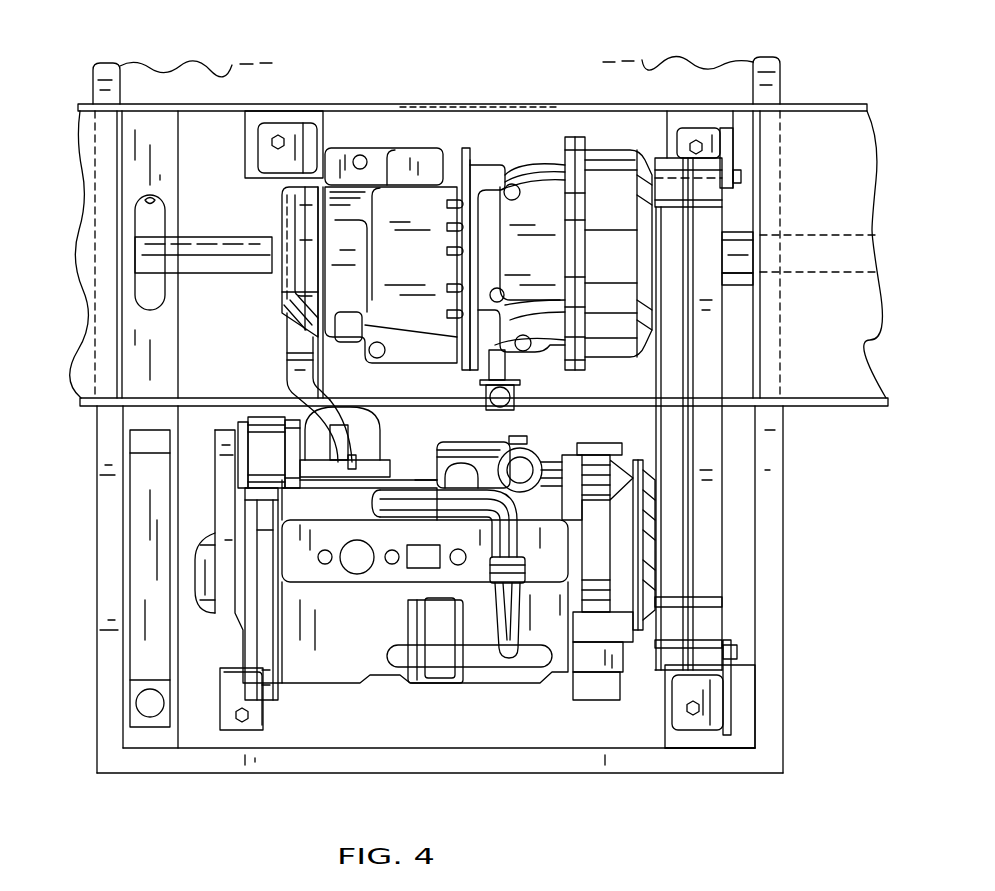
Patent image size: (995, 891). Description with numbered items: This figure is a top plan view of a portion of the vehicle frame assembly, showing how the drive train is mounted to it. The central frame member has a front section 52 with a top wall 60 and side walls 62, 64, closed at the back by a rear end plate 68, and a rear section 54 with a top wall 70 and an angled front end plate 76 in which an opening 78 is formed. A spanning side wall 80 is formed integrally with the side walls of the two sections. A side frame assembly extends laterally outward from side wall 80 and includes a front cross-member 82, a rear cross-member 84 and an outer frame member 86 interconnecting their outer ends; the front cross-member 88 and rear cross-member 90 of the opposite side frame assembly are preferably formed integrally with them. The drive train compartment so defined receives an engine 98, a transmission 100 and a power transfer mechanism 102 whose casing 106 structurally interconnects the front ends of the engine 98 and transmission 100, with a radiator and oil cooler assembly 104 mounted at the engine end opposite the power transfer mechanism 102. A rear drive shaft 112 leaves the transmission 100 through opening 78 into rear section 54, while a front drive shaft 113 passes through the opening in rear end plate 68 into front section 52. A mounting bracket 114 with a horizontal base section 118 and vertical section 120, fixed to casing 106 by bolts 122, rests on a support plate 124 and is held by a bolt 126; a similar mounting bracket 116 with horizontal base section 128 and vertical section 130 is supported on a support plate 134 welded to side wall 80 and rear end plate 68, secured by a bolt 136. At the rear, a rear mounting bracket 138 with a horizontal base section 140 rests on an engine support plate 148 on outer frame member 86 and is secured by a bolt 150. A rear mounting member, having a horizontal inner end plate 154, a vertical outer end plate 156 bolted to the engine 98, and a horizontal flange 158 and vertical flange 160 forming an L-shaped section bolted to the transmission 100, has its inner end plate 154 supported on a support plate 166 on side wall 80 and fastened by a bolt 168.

The front section 52 is at (877, 225).
The rear section 54 is at (71, 178).
The top wall 60 is at (860, 308).
The side wall 62 is at (862, 407).
The side wall 64 is at (832, 108).
The rear end plate 68 is at (753, 213).
The top wall 70 is at (88, 225).
The front end plate 76 is at (160, 125).
The opening 78 is at (157, 220).
The spanning side wall 80 is at (473, 104).
The front cross-member 82 is at (783, 587).
The rear cross-member 84 is at (93, 590).
The outer frame member 86 is at (220, 775).
The front cross-member 88 is at (772, 75).
The rear cross-member 90 is at (99, 92).
The engine 98 is at (510, 712).
The transmission 100 is at (505, 135).
The power transfer mechanism 102 is at (742, 450).
The radiator and oil cooler assembly 104 is at (123, 662).
The casing 106 is at (727, 512).
The rear drive shaft 112 is at (203, 275).
The front drive shaft 113 is at (738, 285).
The mounting bracket 114 is at (728, 707).
The mounting bracket 116 is at (718, 122).
The horizontal base section 118 is at (713, 735).
The vertical section 120 is at (695, 708).
The bolts 122 is at (737, 652).
The support plate 124 is at (680, 728).
The bolt 126 is at (667, 708).
The horizontal base section 128 is at (690, 128).
The vertical section 130 is at (720, 150).
The support plate 134 is at (663, 118).
The bolt 136 is at (689, 143).
The rear mounting bracket 138 is at (222, 725).
The horizontal base section 140 is at (253, 730).
The engine support plate 148 is at (270, 727).
The bolt 150 is at (243, 700).
The horizontal inner end plate 154 is at (290, 122).
The vertical outer end plate 156 is at (320, 420).
The horizontal flange 158 is at (287, 338).
The vertical flange 160 is at (287, 373).
The support plate 166 is at (362, 112).
The bolt 168 is at (280, 136).